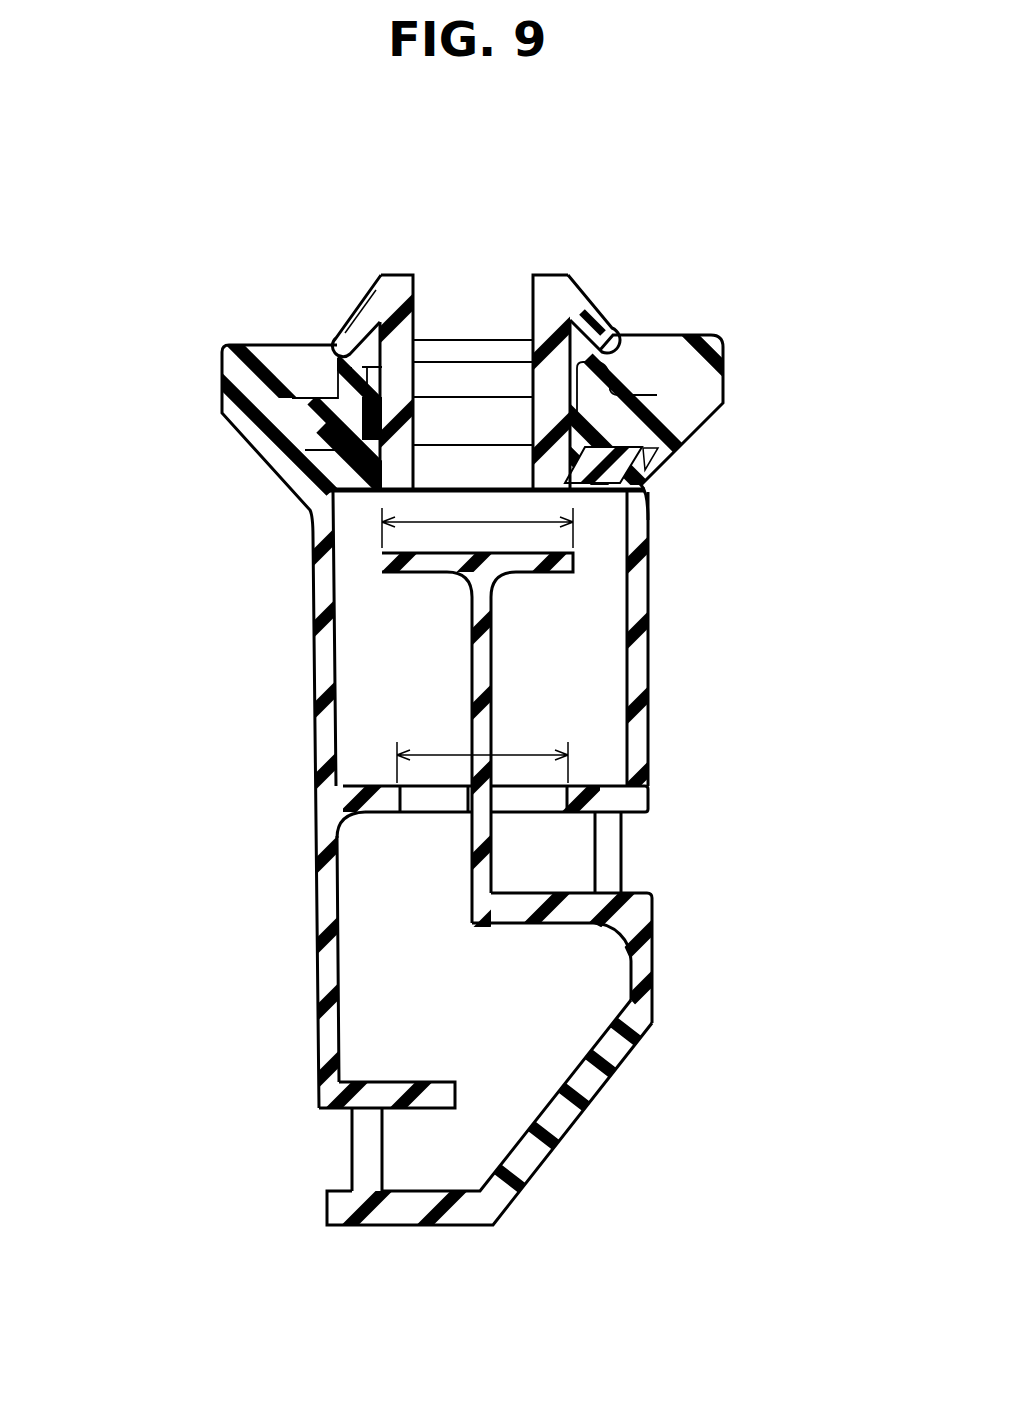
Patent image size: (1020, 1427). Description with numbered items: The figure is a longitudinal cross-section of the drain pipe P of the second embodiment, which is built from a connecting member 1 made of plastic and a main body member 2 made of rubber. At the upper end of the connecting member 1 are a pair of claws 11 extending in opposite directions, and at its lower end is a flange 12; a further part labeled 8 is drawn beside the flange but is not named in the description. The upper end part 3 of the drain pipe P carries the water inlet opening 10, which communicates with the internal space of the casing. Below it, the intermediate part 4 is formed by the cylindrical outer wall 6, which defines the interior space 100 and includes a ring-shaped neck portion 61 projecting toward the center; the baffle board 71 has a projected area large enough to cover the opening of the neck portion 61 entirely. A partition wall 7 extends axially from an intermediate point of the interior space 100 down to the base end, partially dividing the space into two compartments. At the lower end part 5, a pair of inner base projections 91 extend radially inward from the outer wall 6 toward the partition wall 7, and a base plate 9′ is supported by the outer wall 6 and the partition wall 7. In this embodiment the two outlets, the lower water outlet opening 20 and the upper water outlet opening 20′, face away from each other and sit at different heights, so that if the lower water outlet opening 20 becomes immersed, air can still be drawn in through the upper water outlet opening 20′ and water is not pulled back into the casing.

The drain pipe P is at (122, 163).
The connecting member 1 is at (495, 713).
The main body member 2 is at (230, 345).
The upper end part 3 is at (200, 440).
The intermediate part 4 is at (287, 698).
The lower end part 5 is at (292, 1085).
The cylindrical outer wall 6 is at (640, 686).
The partition wall 7 is at (510, 713).
The baffle board 71 is at (538, 572).
The right flange half 8 is at (695, 410).
The bottom plate 9′ is at (448, 1225).
The inner base projections 91 is at (423, 1082).
The water inlet opening 10 is at (466, 405).
The claws 11 is at (342, 335).
The flange 12 is at (650, 462).
The water outlet opening 20 is at (350, 1153).
The upper water outlet opening 20′ is at (630, 864).
The neck portion 61 is at (596, 786).
The interior space 100 is at (596, 625).